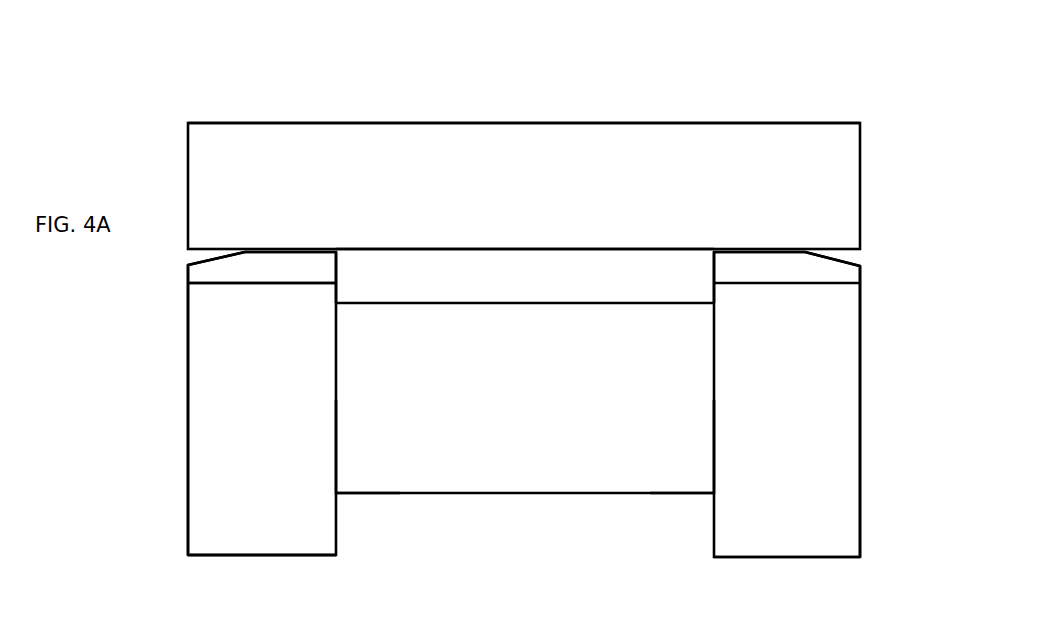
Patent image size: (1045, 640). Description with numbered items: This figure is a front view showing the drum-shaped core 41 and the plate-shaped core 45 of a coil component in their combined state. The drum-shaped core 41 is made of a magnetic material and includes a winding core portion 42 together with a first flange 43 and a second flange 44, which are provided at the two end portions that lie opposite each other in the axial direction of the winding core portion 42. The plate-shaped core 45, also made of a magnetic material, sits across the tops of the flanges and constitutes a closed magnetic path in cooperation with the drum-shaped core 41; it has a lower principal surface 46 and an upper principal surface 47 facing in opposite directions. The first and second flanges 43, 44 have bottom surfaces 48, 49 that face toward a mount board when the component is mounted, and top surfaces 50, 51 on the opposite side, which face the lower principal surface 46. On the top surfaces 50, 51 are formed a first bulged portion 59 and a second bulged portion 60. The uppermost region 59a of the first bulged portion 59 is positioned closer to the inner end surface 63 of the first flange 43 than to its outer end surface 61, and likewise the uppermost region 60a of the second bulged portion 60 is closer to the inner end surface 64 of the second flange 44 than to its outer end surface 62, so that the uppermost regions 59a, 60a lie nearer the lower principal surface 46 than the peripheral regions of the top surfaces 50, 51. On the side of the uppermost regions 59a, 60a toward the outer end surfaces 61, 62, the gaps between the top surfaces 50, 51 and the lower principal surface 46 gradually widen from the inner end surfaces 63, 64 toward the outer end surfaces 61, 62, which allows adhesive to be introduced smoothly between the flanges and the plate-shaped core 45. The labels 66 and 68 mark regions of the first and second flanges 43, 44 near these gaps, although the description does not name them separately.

The drum-shaped core 41 is at (155, 365).
The winding core portion 42 is at (532, 485).
The first flange 43 is at (184, 480).
The second flange 44 is at (864, 468).
The plate-shaped core 45 is at (183, 158).
The lower principal surface 46 is at (504, 250).
The upper principal surface 47 is at (485, 123).
The bottom surface 48 is at (252, 556).
The bottom surface 49 is at (777, 557).
The top surface 50 is at (200, 256).
The top surface 51 is at (848, 260).
The first bulged portion 59 is at (313, 250).
The uppermost region 59a is at (291, 250).
The second bulged portion 60 is at (723, 252).
The uppermost region 60a is at (750, 252).
The outer end surface 61 is at (188, 442).
The outer end surface 62 is at (860, 390).
The inner end surface 63 is at (337, 437).
The inner end surface 64 is at (714, 447).
The first step surface 66 is at (196, 308).
The second step surface 68 is at (848, 335).